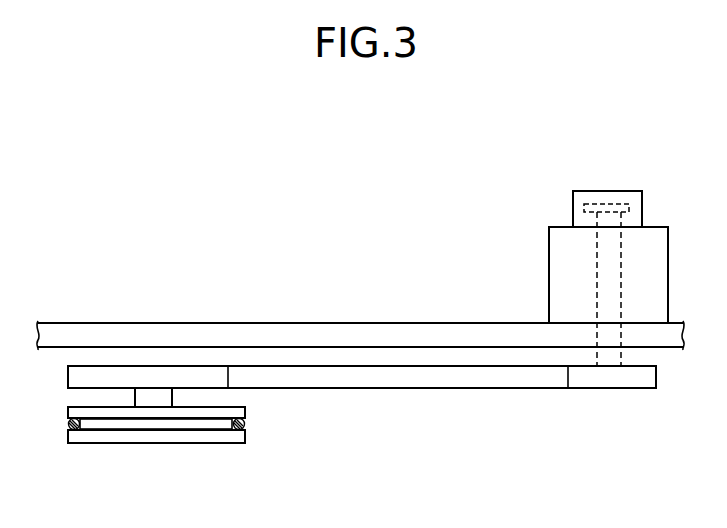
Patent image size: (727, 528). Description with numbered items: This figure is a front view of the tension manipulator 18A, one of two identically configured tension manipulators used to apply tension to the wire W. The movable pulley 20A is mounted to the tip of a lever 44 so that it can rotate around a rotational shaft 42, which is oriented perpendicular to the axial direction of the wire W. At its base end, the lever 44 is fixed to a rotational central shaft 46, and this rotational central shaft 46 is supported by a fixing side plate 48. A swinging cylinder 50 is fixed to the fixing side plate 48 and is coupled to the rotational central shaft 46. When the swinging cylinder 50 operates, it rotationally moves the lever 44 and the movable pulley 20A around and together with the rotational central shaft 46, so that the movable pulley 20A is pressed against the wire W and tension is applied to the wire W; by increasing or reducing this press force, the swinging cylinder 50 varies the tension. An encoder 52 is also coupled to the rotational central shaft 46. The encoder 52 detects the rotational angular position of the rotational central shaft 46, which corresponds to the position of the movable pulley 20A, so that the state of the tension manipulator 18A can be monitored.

The tension manipulator 18A is at (504, 451).
The movable pulley 20A is at (197, 438).
The rotational shaft 42 is at (153, 398).
The lever 44 is at (418, 382).
The rotational central shaft 46 is at (608, 368).
The fixing side plate 48 is at (389, 328).
The swinging cylinder 50 is at (556, 245).
The encoder 52 is at (602, 190).
The wire W is at (247, 425).